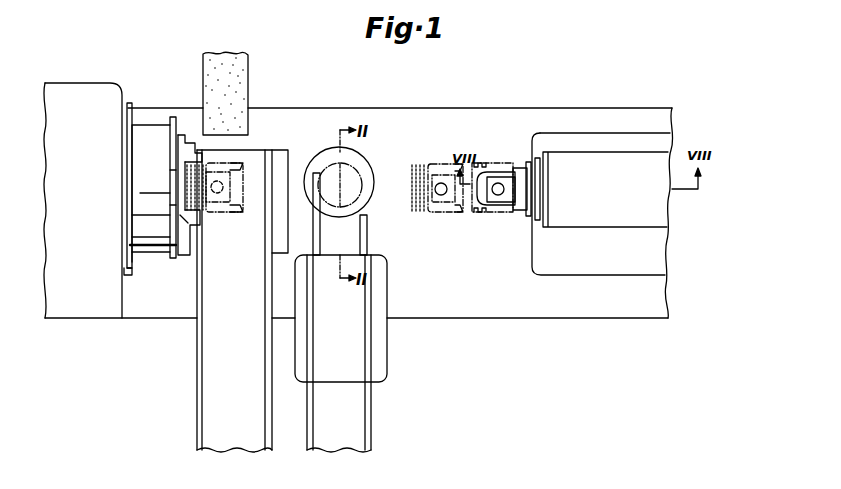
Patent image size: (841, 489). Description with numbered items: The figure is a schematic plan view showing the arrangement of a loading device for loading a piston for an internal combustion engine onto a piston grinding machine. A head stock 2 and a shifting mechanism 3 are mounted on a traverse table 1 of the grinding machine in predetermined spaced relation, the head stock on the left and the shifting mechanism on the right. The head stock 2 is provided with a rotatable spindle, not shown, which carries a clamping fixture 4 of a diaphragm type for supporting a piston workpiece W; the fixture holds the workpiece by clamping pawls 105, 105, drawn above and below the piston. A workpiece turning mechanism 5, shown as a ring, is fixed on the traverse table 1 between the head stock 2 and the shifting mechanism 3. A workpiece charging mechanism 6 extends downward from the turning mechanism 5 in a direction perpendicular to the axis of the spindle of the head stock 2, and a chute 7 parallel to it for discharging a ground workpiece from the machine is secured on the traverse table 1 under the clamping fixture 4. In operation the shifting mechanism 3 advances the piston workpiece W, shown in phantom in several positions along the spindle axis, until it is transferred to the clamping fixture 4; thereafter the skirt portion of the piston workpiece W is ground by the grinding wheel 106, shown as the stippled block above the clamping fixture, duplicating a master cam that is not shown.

The traverse table 1 is at (478, 319).
The head stock 2 is at (88, 206).
The shifting mechanism 3 is at (580, 146).
The clamping fixture 4 is at (156, 120).
The workpiece turning mechanism 5 is at (369, 166).
The workpiece charging mechanism 6 is at (372, 406).
The chute 7 is at (197, 378).
The clamping pawls 105 is at (190, 142).
The grinding wheel 106 is at (239, 99).
The piston workpiece W is at (231, 163).